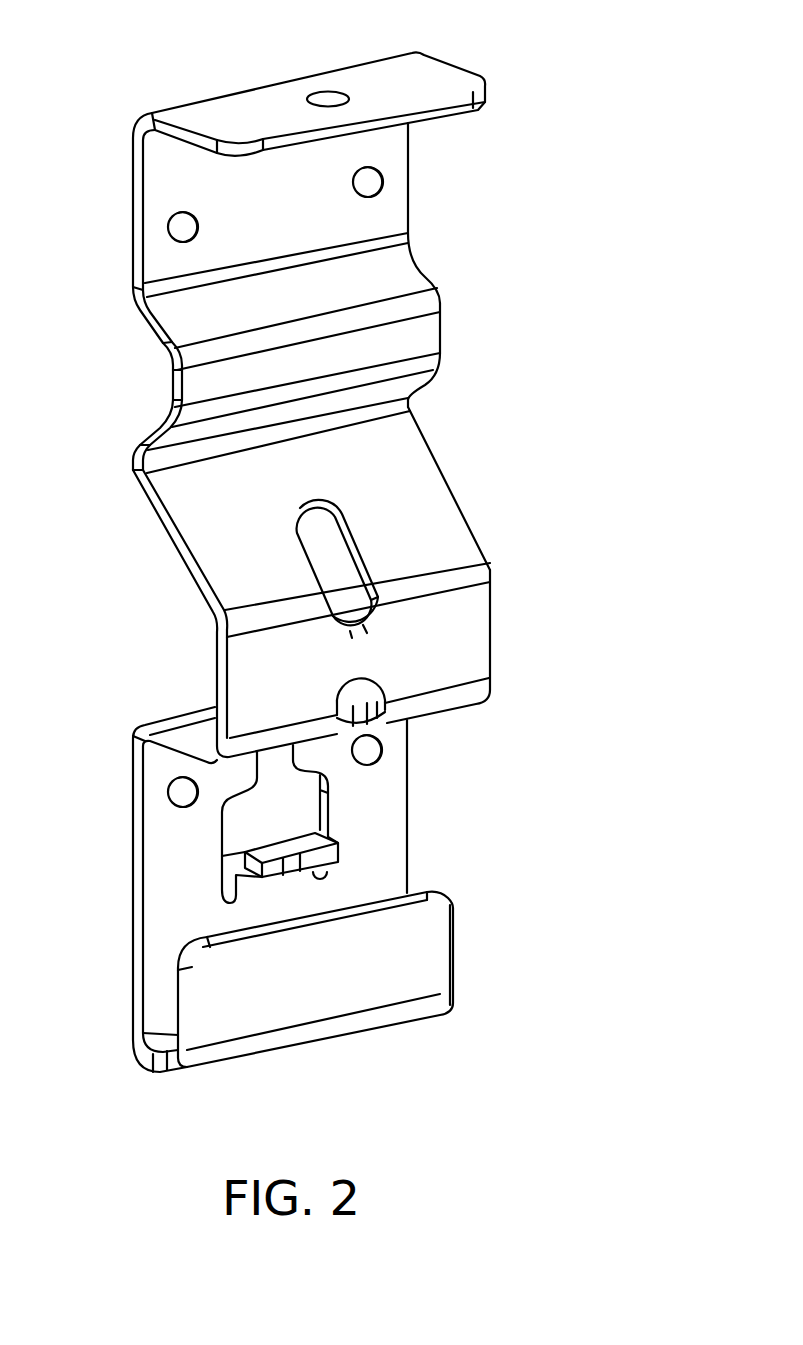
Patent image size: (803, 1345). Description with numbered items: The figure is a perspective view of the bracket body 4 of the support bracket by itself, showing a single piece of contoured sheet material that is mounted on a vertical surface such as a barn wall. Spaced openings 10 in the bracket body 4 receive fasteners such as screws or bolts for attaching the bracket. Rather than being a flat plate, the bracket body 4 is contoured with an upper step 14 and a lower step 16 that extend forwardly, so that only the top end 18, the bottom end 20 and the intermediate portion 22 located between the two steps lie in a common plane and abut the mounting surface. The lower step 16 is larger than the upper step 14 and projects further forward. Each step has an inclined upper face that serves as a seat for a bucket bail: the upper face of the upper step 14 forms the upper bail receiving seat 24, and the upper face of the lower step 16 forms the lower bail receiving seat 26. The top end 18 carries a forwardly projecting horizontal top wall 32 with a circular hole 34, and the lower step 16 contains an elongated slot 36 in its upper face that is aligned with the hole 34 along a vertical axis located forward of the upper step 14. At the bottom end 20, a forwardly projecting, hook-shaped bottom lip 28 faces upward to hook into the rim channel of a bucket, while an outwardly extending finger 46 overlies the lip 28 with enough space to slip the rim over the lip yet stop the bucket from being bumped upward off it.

The bracket body 4 is at (531, 412).
The spaced openings 10 is at (385, 181).
The upper step 14 is at (432, 333).
The lower step 16 is at (494, 623).
The top end 18 is at (282, 221).
The bottom end 20 is at (176, 880).
The intermediate portion 22 is at (128, 450).
The upper bail receiving seat 24 is at (272, 287).
The lower bail receiving seat 26 is at (248, 515).
The bottom lip 28 is at (405, 952).
The top wall 32 is at (414, 80).
The circular hole 34 is at (327, 93).
The elongated slot 36 is at (357, 540).
The finger 46 is at (333, 840).